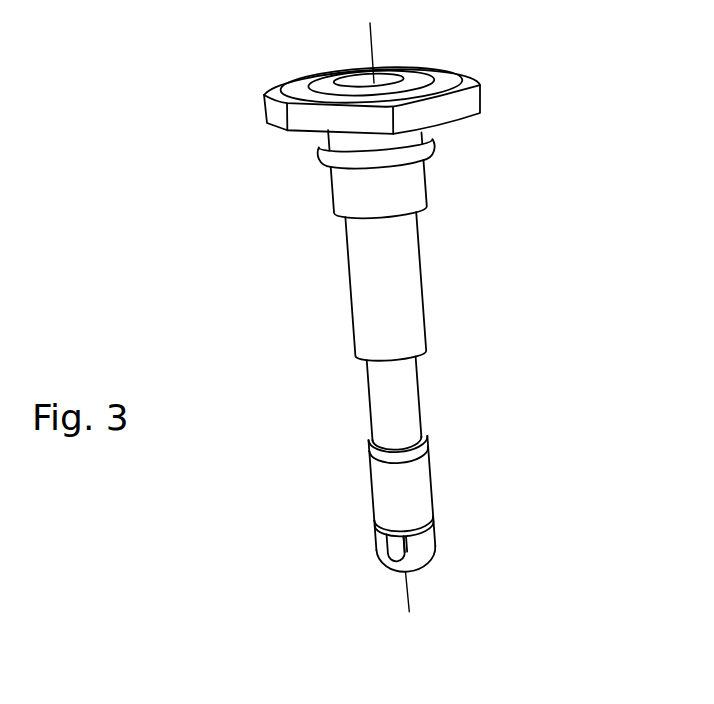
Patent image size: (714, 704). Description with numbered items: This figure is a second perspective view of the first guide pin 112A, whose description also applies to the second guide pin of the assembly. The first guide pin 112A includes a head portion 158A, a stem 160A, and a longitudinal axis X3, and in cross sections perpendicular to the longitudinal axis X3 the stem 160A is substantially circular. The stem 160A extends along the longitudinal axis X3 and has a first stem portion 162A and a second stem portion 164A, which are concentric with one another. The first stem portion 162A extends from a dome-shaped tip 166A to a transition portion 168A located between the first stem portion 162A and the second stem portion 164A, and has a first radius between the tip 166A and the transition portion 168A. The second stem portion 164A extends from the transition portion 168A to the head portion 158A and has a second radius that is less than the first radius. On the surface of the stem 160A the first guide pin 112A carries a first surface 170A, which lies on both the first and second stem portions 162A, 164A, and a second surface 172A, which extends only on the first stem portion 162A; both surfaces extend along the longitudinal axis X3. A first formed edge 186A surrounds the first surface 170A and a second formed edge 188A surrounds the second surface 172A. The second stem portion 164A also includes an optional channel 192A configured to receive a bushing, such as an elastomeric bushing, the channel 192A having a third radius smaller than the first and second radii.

The longitudinal axis X3 is at (373, 54).
The stem 160A is at (355, 336).
The head portion 158A is at (297, 140).
The first guide pin 112A is at (350, 248).
The channel 192A is at (387, 393).
The first surface 170A is at (373, 444).
The second stem portion 164A is at (349, 509).
The first formed edge 186A is at (373, 500).
The transition portion 168A is at (372, 532).
The first stem portion 162A is at (387, 545).
The dome-shaped tip 166A is at (385, 572).
The second surface 172A is at (402, 544).
The second formed edge 188A is at (410, 547).